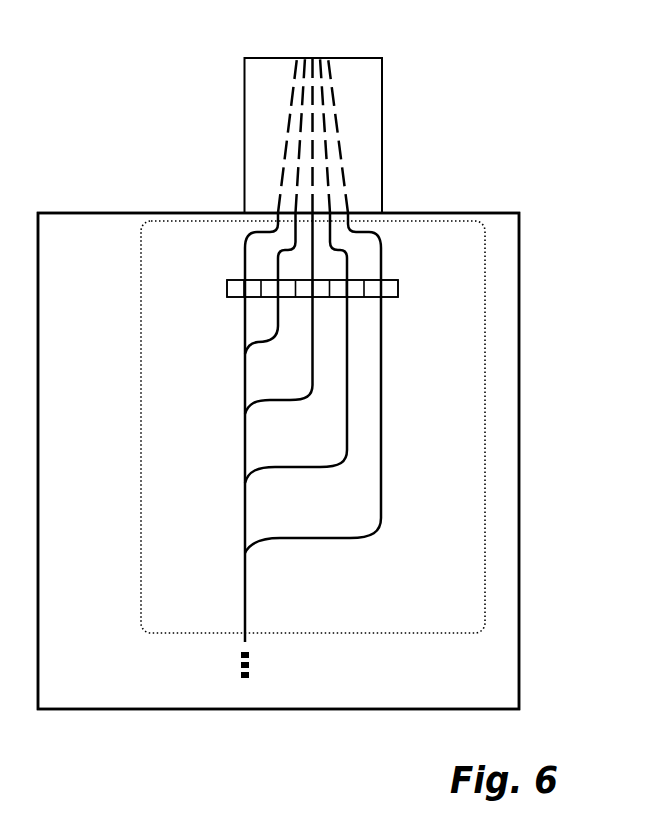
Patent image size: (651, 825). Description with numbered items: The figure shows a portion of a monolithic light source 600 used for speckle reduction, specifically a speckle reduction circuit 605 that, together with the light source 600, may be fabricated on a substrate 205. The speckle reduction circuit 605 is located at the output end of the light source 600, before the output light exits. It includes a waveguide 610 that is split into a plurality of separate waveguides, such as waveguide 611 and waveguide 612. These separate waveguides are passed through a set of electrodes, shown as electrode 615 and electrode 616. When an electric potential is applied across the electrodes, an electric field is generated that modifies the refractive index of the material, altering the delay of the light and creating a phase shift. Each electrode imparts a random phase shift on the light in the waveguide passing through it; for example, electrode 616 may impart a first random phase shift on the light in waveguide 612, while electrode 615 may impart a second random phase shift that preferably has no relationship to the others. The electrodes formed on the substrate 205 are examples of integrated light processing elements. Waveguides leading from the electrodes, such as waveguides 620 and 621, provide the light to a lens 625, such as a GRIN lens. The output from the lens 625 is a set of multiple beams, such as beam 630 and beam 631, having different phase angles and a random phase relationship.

The light source 600 is at (119, 40).
The substrate 205 is at (97, 258).
The speckle reduction circuit 605 is at (141, 500).
The waveguide 610 is at (244, 607).
The waveguide 611 is at (346, 427).
The waveguide 612 is at (381, 485).
The electrode 615 is at (236, 295).
The electrode 616 is at (390, 293).
The waveguide 620 is at (244, 260).
The waveguide 621 is at (381, 258).
The lens 625 is at (382, 157).
The beam 630 is at (290, 92).
The beam 631 is at (336, 92).